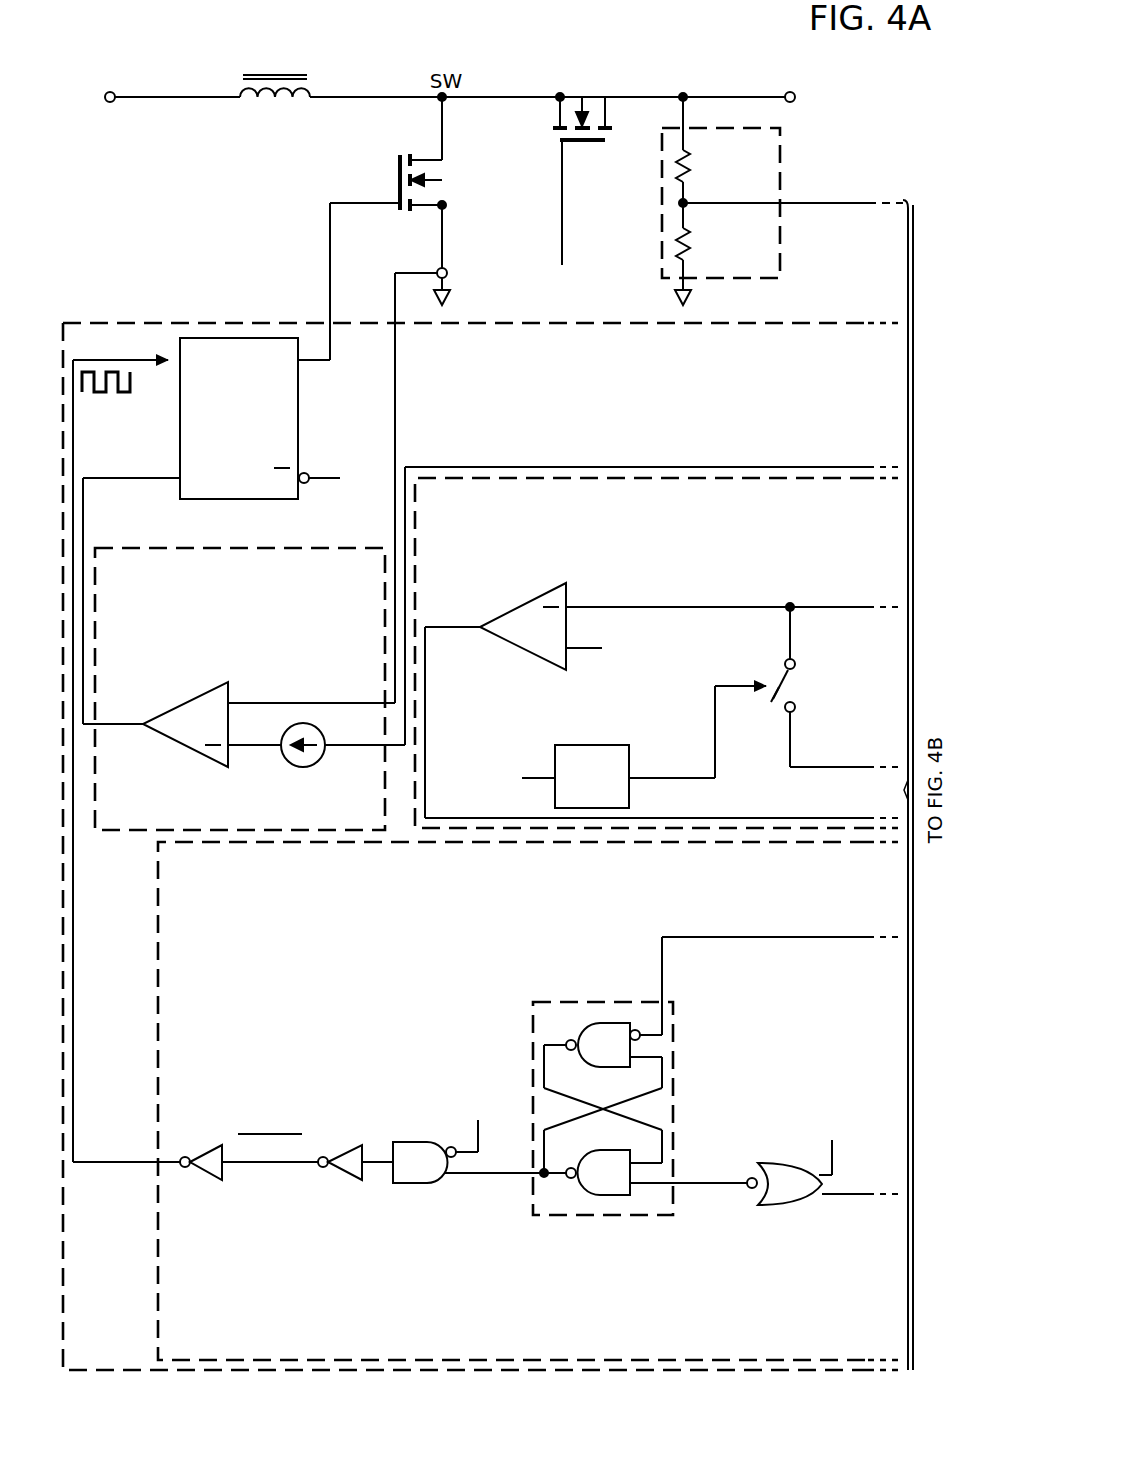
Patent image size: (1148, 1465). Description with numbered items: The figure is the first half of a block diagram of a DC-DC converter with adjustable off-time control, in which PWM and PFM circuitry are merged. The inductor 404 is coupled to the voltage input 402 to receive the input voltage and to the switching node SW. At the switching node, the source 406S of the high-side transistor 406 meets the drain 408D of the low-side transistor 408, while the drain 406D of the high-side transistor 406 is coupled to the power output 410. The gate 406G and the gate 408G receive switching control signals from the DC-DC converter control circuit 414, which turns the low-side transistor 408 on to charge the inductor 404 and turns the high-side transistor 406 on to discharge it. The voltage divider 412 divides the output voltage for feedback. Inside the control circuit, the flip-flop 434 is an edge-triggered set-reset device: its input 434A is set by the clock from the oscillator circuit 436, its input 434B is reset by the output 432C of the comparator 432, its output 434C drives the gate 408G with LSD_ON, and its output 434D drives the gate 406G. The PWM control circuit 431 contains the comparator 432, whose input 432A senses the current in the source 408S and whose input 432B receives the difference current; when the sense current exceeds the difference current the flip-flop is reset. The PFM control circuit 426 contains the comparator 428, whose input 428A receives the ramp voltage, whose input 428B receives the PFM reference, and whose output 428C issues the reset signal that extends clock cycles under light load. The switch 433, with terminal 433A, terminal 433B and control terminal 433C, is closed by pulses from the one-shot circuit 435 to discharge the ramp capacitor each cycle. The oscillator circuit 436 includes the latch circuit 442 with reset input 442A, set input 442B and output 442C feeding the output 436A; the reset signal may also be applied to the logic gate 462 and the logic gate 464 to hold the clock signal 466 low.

The voltage input 402 is at (180, 96).
The inductor 404 is at (276, 74).
The high-side transistor 406 is at (590, 146).
The source 406S is at (548, 95).
The drain 406D is at (618, 95).
The gate 406G is at (559, 150).
The low-side transistor 408 is at (396, 170).
The drain 408D is at (438, 150).
The gate 408G is at (392, 212).
The source 408S is at (447, 212).
The power output 410 is at (730, 95).
The voltage divider 412 is at (785, 164).
The DC-DC converter control circuit 414 is at (610, 408).
The PFM control circuit 426 is at (785, 514).
The comparator 428 is at (520, 602).
The input 428A is at (572, 603).
The input 428B is at (572, 657).
The output 428C is at (481, 636).
The PWM control circuit 431 is at (320, 596).
The comparator 432 is at (176, 701).
The input 432A is at (232, 682).
The input 432B is at (235, 770).
The output 432C is at (143, 735).
The switch 433 is at (779, 712).
The terminal 433A is at (797, 660).
The terminal 433B is at (797, 713).
The control terminal 433C is at (776, 684).
The flip-flop 434 is at (219, 466).
The input 434A is at (176, 368).
The input 434B is at (175, 483).
The output 434C is at (302, 365).
The output 434D is at (310, 487).
The one-shot circuit 435 is at (555, 760).
The oscillator circuit 436 is at (325, 1016).
The output 436A is at (155, 1156).
The latch circuit 442 is at (618, 1222).
The reset input 442A is at (656, 1001).
The set input 442B is at (680, 1190).
The output 442C is at (527, 1178).
The logic gate 462 is at (790, 1210).
The logic gate 464 is at (428, 1187).
The clock signal 466 is at (120, 1167).